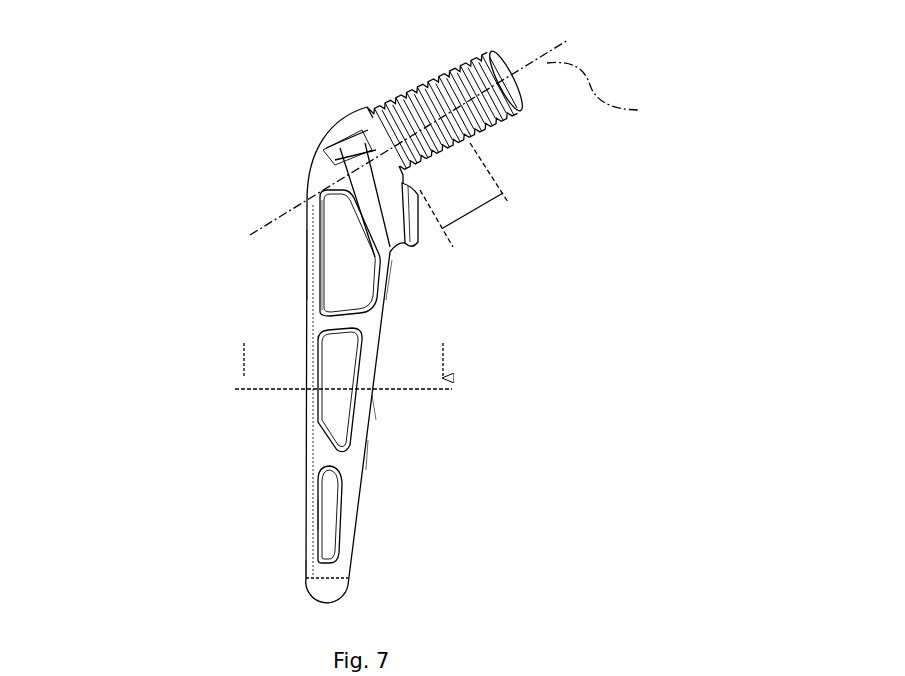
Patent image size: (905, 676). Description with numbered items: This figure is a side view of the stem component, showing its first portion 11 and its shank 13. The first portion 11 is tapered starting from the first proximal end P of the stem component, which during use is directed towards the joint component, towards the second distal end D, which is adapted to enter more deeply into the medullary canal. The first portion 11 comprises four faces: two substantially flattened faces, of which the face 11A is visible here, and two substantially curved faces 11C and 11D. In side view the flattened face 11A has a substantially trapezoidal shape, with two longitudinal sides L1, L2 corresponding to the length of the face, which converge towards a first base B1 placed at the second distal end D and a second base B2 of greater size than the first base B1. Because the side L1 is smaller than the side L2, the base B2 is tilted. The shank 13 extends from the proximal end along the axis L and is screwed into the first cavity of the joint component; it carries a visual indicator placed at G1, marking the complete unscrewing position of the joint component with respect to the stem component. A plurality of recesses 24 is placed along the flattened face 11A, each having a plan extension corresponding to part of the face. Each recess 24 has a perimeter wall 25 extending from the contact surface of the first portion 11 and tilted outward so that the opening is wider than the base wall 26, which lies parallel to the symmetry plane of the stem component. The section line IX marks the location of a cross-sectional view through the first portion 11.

The first portion 11 is at (287, 473).
The shank 13 is at (370, 81).
The recesses 24 is at (331, 248).
The perimeter wall 25 is at (341, 525).
The base wall 26 is at (358, 287).
The substantially flattened face 11A is at (353, 462).
The substantially curved face 11C is at (428, 300).
The substantially curved face 11D is at (292, 292).
The first base B1 is at (361, 590).
The second base B2 is at (323, 192).
The second distal end D is at (282, 590).
The first proximal end P is at (457, 265).
The maximum distance G1 is at (479, 220).
The longitudinal axis L is at (470, 137).
The longitudinal side L1 is at (370, 415).
The longitudinal side L2 is at (315, 515).
The section line IX- IX is at (340, 352).